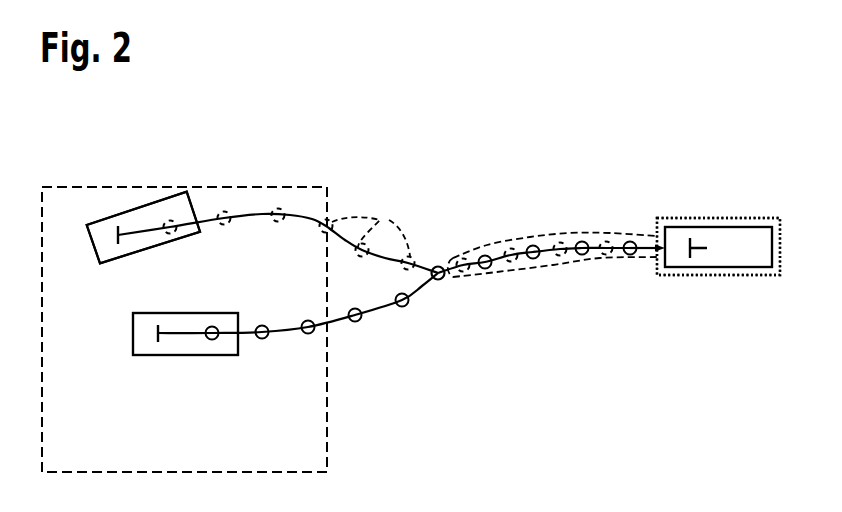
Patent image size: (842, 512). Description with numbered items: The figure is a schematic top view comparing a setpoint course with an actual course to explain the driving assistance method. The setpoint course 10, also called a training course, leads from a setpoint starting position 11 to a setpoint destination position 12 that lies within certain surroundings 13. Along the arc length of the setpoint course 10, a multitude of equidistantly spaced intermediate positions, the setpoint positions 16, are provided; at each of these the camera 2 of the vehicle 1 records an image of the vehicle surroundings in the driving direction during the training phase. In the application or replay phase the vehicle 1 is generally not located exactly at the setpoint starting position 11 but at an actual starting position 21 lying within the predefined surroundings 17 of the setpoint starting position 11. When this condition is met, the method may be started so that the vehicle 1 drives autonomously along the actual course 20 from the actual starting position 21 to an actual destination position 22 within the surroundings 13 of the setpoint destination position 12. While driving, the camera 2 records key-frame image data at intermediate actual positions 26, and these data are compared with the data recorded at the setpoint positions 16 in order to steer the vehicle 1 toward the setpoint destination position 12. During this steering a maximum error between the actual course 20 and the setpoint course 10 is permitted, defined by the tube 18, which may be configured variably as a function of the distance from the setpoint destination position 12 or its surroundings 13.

The vehicle 1 is at (162, 192).
The camera 2 is at (123, 230).
The setpoint course 10 is at (422, 280).
The setpoint starting position 11 is at (142, 369).
The setpoint destination position 12 is at (758, 224).
The surroundings 13 is at (702, 215).
The setpoint positions 16 is at (262, 339).
The surroundings 17 is at (328, 451).
The tube 18 is at (545, 235).
The actual course 20 is at (258, 216).
The actual starting position 21 is at (95, 213).
The actual destination position 22 is at (667, 212).
The actual positions 26 is at (389, 218).